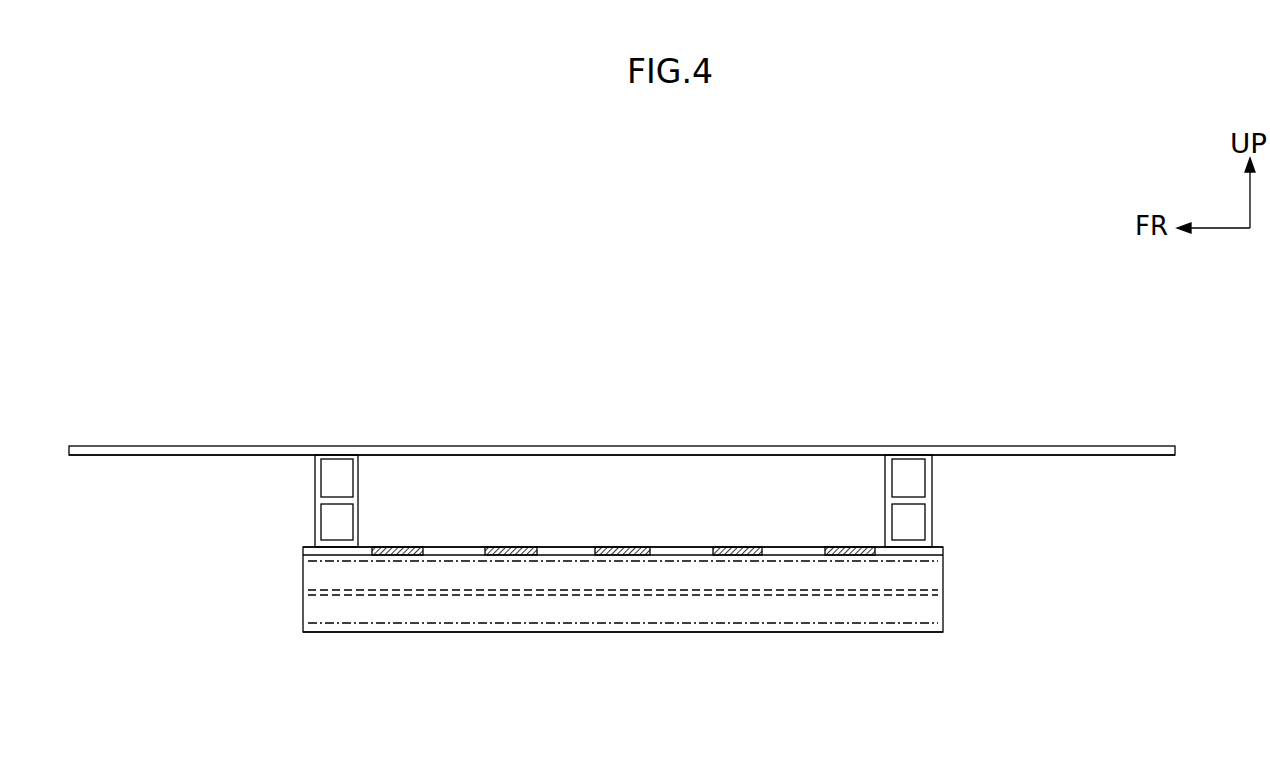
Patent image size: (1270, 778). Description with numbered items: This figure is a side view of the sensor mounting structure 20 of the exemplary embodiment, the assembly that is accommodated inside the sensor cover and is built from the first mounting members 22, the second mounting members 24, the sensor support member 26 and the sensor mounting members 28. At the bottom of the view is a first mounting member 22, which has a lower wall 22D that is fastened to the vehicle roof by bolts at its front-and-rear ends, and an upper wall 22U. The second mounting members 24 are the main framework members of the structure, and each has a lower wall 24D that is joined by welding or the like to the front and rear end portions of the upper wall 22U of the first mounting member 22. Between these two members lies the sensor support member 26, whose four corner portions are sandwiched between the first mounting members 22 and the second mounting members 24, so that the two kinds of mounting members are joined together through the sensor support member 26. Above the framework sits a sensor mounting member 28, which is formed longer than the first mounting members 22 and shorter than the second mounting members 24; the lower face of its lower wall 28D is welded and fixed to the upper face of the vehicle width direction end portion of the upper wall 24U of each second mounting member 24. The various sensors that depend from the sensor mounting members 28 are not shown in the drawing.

The sensor mounting structure 20 is at (843, 372).
The first mounting member 22 is at (944, 633).
The upper wall of first mounting member 22U is at (571, 553).
The lower wall of first mounting member 22D is at (633, 632).
The second mounting member 24 is at (314, 503).
The upper wall of second mounting member 24U is at (338, 455).
The lower wall of second mounting member 24D is at (340, 548).
The sensor support member 26 is at (678, 553).
The sensor mounting member 28 is at (1157, 446).
The lower wall of sensor mounting member 28D is at (1133, 455).